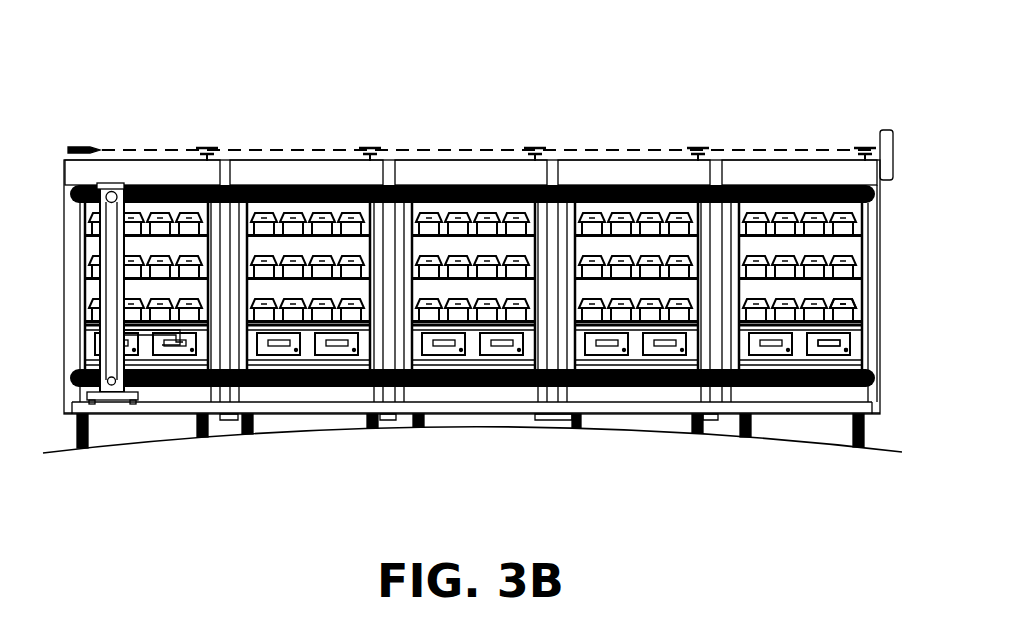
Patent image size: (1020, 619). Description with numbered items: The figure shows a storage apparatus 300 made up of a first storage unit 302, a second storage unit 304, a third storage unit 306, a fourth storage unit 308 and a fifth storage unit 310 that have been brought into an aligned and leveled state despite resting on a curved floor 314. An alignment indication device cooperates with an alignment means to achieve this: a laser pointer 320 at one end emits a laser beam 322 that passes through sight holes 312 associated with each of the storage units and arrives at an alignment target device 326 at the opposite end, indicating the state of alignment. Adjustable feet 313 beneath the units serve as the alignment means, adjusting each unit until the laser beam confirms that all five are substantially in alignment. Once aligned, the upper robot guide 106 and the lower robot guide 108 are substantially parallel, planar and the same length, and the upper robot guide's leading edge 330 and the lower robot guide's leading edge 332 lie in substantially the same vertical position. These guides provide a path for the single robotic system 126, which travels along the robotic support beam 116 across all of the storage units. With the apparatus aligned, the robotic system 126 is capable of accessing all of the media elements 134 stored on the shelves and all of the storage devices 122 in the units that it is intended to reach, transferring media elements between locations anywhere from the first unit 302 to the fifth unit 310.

The storage apparatus 300 is at (466, 80).
The upper robot guide 106 is at (685, 185).
The first storage unit 302 is at (172, 160).
The second storage unit 304 is at (245, 160).
The third storage unit 306 is at (493, 159).
The fourth storage unit 308 is at (577, 159).
The fifth storage unit 310 is at (780, 159).
The sight holes 312 is at (370, 146).
The laser pointer 320 is at (77, 146).
The laser beam 322 is at (818, 147).
The alignment target device 326 is at (885, 130).
The upper robot guide leading edge 330 is at (76, 187).
The lower robot guide leading edge 332 is at (75, 388).
The robotic system 126 is at (104, 185).
The media elements 134 is at (853, 312).
The storage devices 122 is at (848, 345).
The lower robot guide 108 is at (292, 388).
The robotic support beam 116 is at (460, 413).
The adjustable feet 313 is at (577, 428).
The curved floor 314 is at (135, 450).